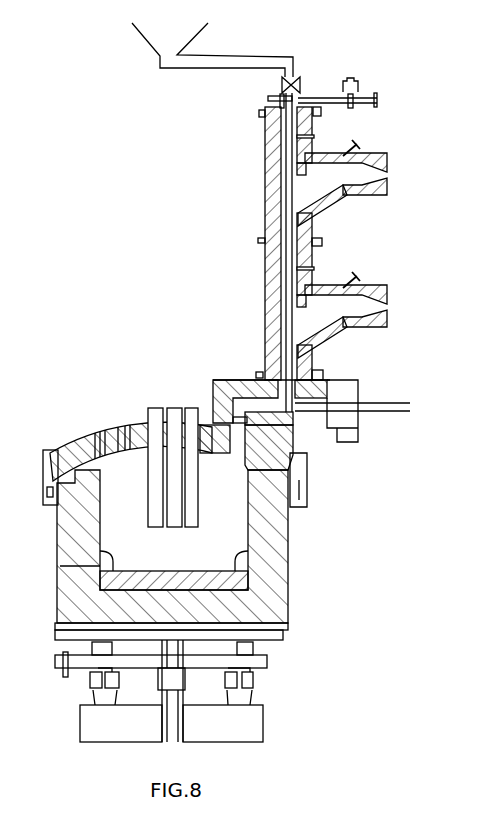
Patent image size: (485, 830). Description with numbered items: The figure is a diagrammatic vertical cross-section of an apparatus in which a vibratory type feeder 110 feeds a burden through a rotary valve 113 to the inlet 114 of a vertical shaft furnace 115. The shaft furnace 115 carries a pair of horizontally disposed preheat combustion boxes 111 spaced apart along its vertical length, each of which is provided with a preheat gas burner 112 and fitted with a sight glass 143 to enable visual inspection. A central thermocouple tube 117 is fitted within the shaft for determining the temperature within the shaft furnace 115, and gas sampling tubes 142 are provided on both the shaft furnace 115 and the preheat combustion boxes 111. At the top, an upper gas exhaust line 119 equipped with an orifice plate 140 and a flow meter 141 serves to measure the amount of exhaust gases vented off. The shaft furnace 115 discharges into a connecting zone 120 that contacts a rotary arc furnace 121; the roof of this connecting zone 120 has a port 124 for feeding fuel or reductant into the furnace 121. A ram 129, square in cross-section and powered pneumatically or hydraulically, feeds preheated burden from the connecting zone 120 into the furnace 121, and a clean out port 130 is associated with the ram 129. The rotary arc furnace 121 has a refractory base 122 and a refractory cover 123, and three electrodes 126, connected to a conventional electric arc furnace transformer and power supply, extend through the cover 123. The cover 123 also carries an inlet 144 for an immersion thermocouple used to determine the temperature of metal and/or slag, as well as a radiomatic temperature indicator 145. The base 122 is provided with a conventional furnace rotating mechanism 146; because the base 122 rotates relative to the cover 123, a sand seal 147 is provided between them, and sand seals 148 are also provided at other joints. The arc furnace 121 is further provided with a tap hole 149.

The vibratory type feeder 110 is at (140, 38).
The rotary valve 113 is at (297, 82).
The inlet 114 is at (268, 98).
The vertical shaft furnace 115 is at (265, 302).
The central thermocouple tube 117 is at (290, 182).
The preheat gas burner 112 is at (389, 176).
The preheat combustion boxes 111 is at (350, 195).
The sight glass 143 is at (359, 146).
The gas sampling tubes 142 is at (306, 137).
The sand seals 148 is at (262, 119).
The upper gas exhaust line 119 is at (377, 94).
The orifice plate 140 is at (352, 108).
The flow meter 141 is at (356, 78).
The port 124 is at (222, 380).
The connecting zone 120 is at (255, 423).
The ram 129 is at (340, 406).
The clean out port 130 is at (336, 444).
The refractory cover 123 is at (76, 448).
The inlet 144 is at (100, 440).
The radiomatic temperature indicator 145 is at (120, 434).
The sand seal 147 is at (45, 490).
The electrodes 126 is at (153, 410).
The rotary arc furnace 121 is at (289, 541).
The refractory base 122 is at (268, 574).
The tap hole 149 is at (100, 566).
The furnace rotating mechanism 146 is at (278, 662).